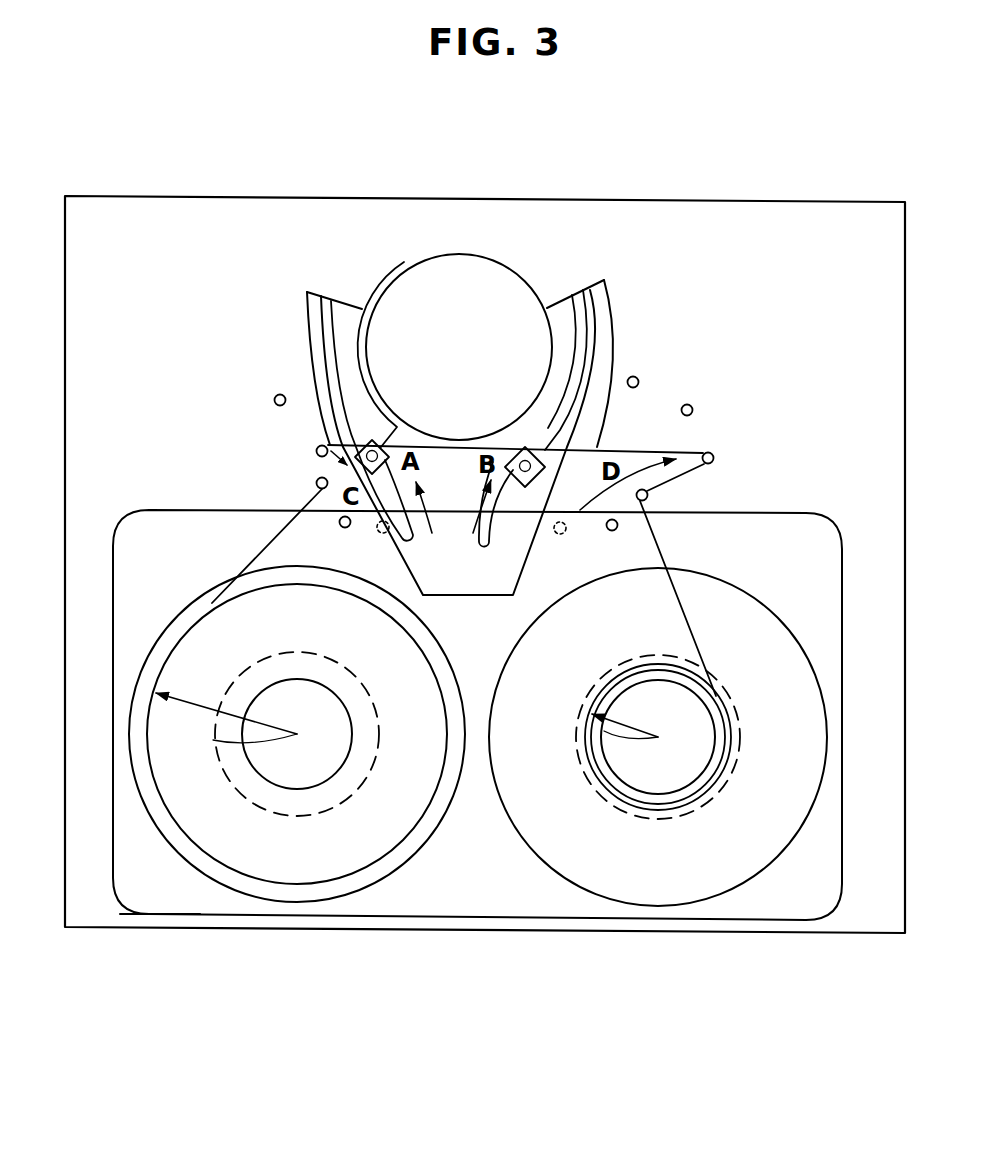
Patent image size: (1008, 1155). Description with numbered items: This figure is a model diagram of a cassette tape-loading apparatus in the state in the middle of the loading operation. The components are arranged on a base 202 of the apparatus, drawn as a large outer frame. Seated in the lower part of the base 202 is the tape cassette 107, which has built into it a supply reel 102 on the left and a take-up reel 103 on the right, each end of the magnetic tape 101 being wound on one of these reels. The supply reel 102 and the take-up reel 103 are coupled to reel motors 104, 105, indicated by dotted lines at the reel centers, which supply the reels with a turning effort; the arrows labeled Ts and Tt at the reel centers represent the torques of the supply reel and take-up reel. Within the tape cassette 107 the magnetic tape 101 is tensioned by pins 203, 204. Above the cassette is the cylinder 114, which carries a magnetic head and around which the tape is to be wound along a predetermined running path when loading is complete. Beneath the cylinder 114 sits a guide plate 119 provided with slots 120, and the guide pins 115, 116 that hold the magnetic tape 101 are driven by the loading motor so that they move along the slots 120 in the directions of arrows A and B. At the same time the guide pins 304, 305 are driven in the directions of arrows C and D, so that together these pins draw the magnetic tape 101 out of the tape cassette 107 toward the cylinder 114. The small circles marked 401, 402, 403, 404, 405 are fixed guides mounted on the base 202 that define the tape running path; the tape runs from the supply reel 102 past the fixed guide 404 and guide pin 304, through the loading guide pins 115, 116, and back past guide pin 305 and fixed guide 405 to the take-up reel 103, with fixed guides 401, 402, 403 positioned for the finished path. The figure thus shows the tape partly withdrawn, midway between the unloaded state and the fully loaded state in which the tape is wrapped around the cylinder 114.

The base 202 is at (767, 200).
The magnetic tape 101 is at (255, 554).
The tape cassette 107 is at (163, 900).
The supply reel 102 is at (329, 888).
The take-up reel 103 is at (562, 855).
The reel motor 104 is at (270, 795).
The reel motor 105 is at (697, 804).
The cylinder 114 is at (438, 268).
The guide plate 119 is at (603, 322).
The slots 120 is at (333, 298).
The guide pin 115 is at (385, 428).
The guide pin 116 is at (516, 440).
The fixed guide 401 is at (275, 400).
The fixed guide 402 is at (638, 380).
The fixed guide 403 is at (692, 410).
The guide pin 304 is at (317, 451).
The guide pin 305 is at (714, 458).
The fixed guide 404 is at (317, 483).
The fixed guide 405 is at (648, 495).
The pin 203 is at (340, 523).
The pin 204 is at (607, 526).